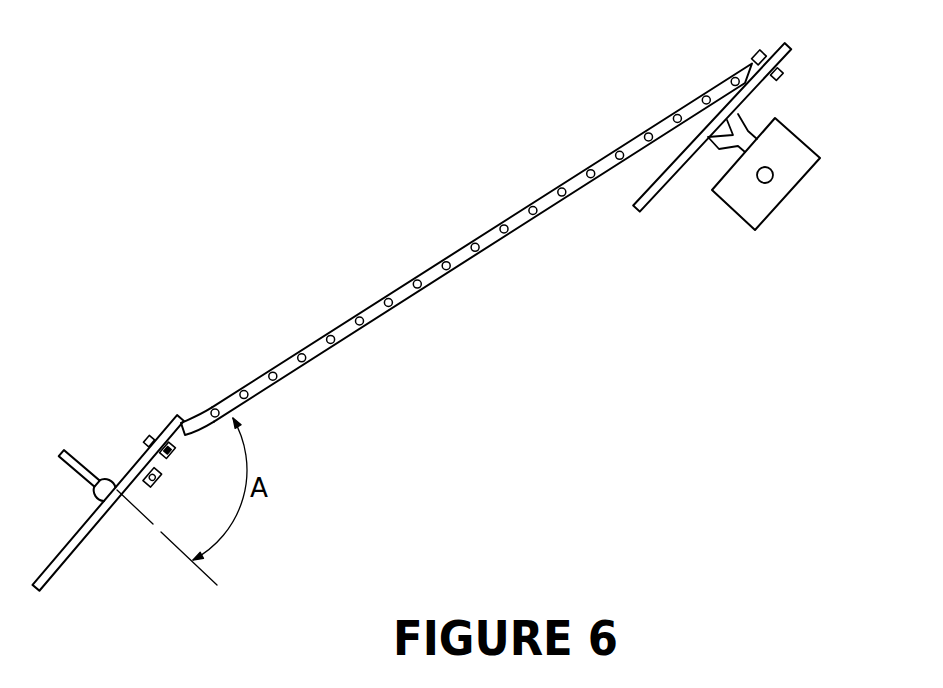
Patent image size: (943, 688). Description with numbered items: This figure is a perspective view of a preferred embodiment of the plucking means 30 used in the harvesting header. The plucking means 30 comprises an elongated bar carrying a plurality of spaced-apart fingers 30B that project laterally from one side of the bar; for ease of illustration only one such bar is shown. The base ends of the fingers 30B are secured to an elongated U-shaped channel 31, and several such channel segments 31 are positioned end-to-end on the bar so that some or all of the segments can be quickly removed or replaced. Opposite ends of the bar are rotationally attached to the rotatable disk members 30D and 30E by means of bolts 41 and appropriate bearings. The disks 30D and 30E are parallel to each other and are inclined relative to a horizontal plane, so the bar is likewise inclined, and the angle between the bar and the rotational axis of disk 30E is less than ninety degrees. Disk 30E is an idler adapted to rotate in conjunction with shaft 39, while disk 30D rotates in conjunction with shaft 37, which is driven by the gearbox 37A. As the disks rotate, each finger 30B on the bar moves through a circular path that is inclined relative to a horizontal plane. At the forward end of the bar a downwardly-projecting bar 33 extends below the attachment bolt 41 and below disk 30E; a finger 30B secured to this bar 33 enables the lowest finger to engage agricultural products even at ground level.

The plucking means 30 is at (503, 210).
The elongated U-shaped channel 31 is at (594, 160).
The fingers 30B is at (567, 197).
The downwardly-projecting bar 33 is at (148, 486).
The rotatable disk member 30E is at (58, 573).
The shaft 39 is at (82, 461).
The bolts 41 is at (150, 434).
The rotatable disk member 30D is at (652, 201).
The shaft 37 is at (734, 122).
The gearbox 37A is at (803, 143).